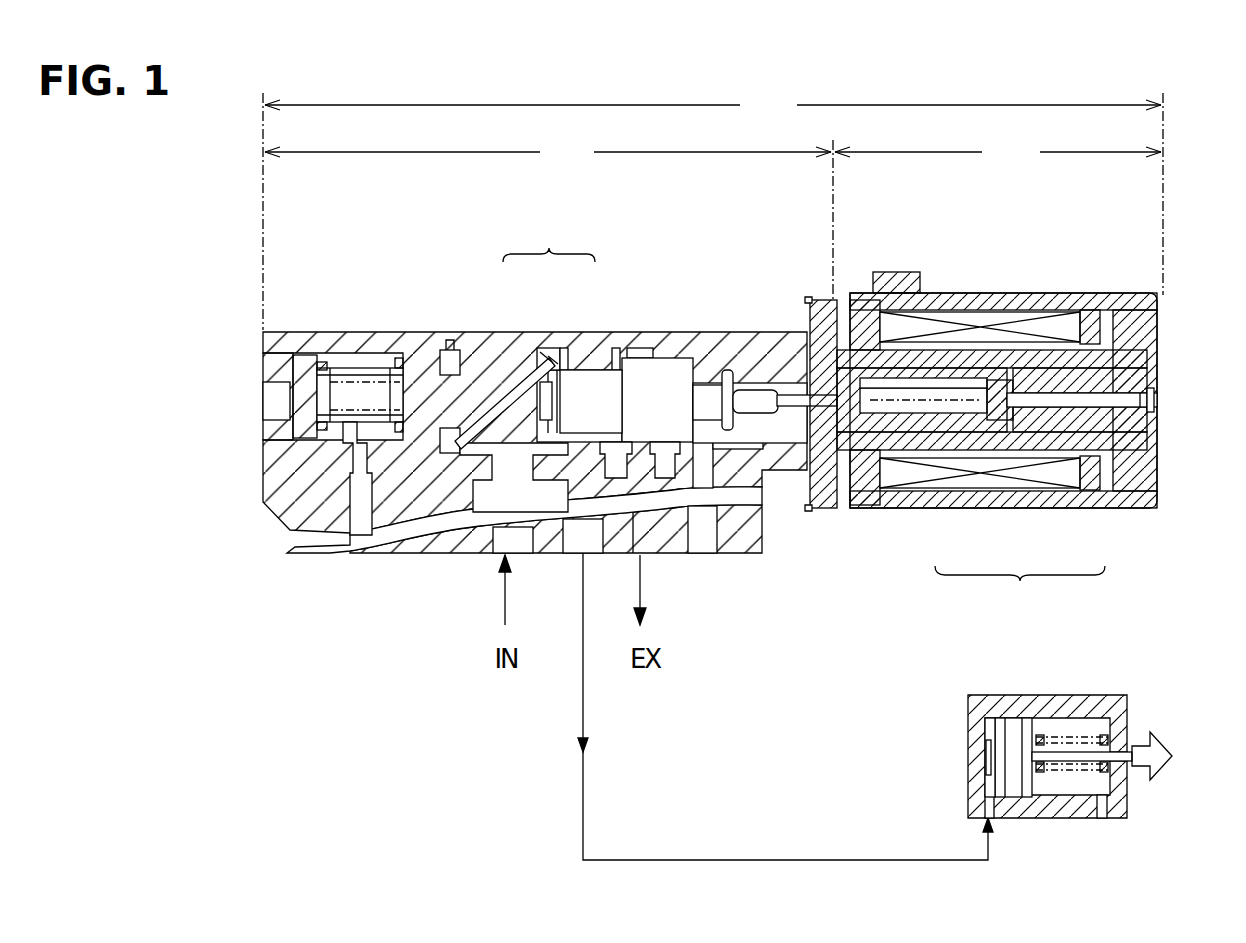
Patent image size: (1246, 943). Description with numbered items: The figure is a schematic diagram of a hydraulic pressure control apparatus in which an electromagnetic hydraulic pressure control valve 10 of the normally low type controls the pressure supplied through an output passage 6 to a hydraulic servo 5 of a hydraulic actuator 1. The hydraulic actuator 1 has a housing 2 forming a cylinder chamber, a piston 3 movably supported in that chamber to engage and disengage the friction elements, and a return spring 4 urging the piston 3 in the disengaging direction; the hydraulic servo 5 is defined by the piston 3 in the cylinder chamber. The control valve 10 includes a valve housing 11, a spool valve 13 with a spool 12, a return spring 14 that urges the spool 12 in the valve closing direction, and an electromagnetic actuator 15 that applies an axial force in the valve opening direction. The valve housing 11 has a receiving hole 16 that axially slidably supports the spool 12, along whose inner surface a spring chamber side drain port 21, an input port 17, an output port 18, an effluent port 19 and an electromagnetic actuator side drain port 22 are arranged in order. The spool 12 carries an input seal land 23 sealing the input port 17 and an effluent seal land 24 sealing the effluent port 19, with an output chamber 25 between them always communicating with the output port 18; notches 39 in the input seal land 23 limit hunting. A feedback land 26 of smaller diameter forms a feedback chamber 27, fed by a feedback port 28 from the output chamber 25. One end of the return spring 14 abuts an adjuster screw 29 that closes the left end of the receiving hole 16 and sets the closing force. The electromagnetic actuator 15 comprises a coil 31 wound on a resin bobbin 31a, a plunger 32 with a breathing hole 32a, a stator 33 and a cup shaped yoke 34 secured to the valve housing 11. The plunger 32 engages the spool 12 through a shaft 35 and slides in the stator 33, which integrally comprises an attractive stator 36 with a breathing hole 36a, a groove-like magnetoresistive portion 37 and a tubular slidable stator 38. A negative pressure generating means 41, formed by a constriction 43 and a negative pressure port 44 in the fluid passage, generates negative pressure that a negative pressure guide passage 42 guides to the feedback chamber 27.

The hydraulic actuator 1 is at (1049, 747).
The housing 2 is at (1062, 702).
The piston 3 is at (1013, 740).
The return spring 4 is at (1065, 800).
The hydraulic servo 5 is at (985, 727).
The output passage 6 is at (765, 860).
The electromagnetic hydraulic pressure control valve 10 is at (713, 210).
The valve housing 11 is at (364, 352).
The spool 12 is at (638, 356).
The spool valve 13 is at (548, 152).
The return spring 14 is at (326, 352).
The electromagnetic actuator 15 is at (998, 152).
The receiving hole 16 is at (708, 365).
The input port 17 is at (488, 545).
The output port 18 is at (575, 545).
The effluent port 19 is at (635, 545).
The spring chamber side drain port 21 is at (366, 553).
The electromagnetic actuator side drain port 22 is at (706, 545).
The input seal land 23 is at (468, 352).
The effluent seal land 24 is at (673, 338).
The output chamber 25 is at (604, 352).
The feedback land 26 is at (400, 352).
The feedback chamber 27 is at (432, 352).
The feedback port 28 is at (490, 340).
The adjuster screw 29 is at (265, 376).
The coil 31 is at (1008, 322).
The bobbin 31a is at (1053, 340).
The plunger 32 is at (1135, 373).
The breathing hole 32a is at (1135, 412).
The stator 33 is at (992, 426).
The yoke 34 is at (1147, 500).
The shaft 35 is at (810, 395).
The attractive stator 36 is at (943, 433).
The breathing hole 36a is at (955, 377).
The magnetoresistive portion 37 is at (1023, 443).
The slidable stator 38 is at (1080, 443).
The notches 39 is at (580, 358).
The negative pressure generating means 41 is at (549, 241).
The negative pressure guide passage 42 is at (501, 322).
The constriction 43 is at (553, 350).
The negative pressure port 44 is at (528, 350).